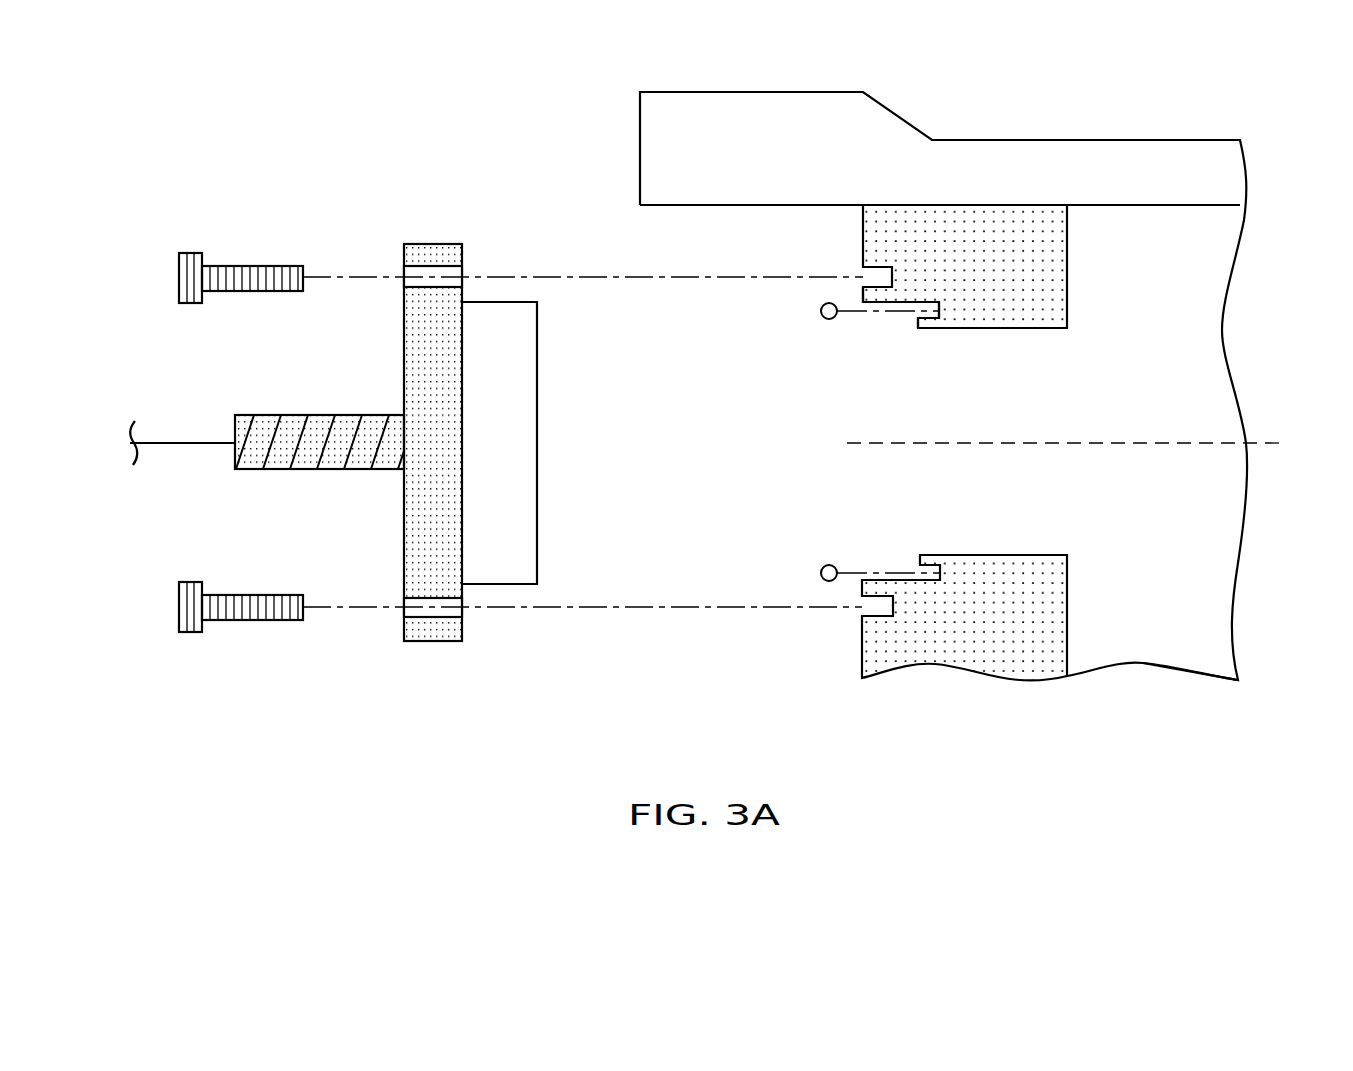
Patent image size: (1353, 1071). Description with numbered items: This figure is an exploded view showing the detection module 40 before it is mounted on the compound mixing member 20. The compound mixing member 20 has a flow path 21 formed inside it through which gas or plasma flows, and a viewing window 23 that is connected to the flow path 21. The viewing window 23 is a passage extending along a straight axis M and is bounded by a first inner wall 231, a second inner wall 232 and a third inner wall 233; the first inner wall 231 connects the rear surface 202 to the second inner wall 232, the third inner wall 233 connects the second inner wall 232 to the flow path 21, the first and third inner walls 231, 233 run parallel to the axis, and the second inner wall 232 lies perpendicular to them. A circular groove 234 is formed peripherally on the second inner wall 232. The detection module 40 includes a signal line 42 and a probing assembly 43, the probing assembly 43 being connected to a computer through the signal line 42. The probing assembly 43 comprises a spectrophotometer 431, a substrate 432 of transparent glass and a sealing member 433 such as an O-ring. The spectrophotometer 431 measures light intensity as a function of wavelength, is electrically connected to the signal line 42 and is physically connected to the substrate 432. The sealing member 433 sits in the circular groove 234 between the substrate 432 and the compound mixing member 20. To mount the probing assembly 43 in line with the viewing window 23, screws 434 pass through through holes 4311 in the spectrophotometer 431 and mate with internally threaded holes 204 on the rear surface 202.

The compound mixing member 20 is at (1145, 108).
The flow path 21 is at (1199, 575).
The viewing window 23 is at (1025, 422).
The detection module 40 is at (155, 205).
The signal line 42 is at (181, 448).
The probing assembly 43 is at (360, 220).
The rear surface 202 is at (863, 233).
The hole with internal thread 204 is at (856, 613).
The first inner wall 231 is at (880, 297).
The second inner wall 232 is at (925, 313).
The third inner wall 233 is at (1010, 340).
The circular groove 234 is at (906, 318).
The spectrophotometer 431 is at (420, 362).
The substrate 432 is at (487, 527).
The sealing member 433 is at (825, 567).
The screws 434 is at (179, 278).
The through hole 4311 is at (397, 285).